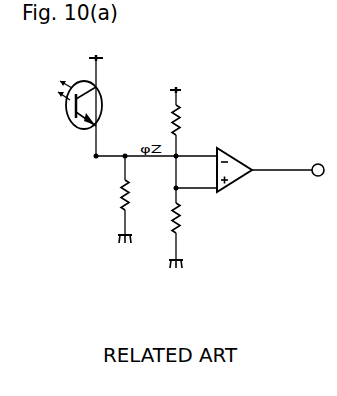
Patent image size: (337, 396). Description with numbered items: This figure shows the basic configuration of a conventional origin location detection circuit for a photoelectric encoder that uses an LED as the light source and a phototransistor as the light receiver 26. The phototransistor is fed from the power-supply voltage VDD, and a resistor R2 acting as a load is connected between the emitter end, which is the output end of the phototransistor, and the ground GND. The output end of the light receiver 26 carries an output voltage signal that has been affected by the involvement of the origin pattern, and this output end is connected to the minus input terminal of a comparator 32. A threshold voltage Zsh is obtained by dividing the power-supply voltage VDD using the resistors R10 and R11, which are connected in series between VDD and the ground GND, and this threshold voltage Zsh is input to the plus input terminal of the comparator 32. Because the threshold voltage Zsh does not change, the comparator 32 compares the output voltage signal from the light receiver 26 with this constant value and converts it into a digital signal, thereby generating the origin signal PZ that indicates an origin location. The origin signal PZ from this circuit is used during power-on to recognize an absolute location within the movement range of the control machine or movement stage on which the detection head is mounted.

The light receiver 26 is at (68, 121).
The comparator 32 is at (240, 158).
The resistor R10 is at (189, 121).
The resistor R11 is at (189, 235).
The resistor R2 is at (114, 195).
The power-supply voltage VDD is at (117, 59).
The ground GND is at (126, 252).
The threshold voltage Zsh is at (196, 182).
The origin signal PZ is at (288, 182).